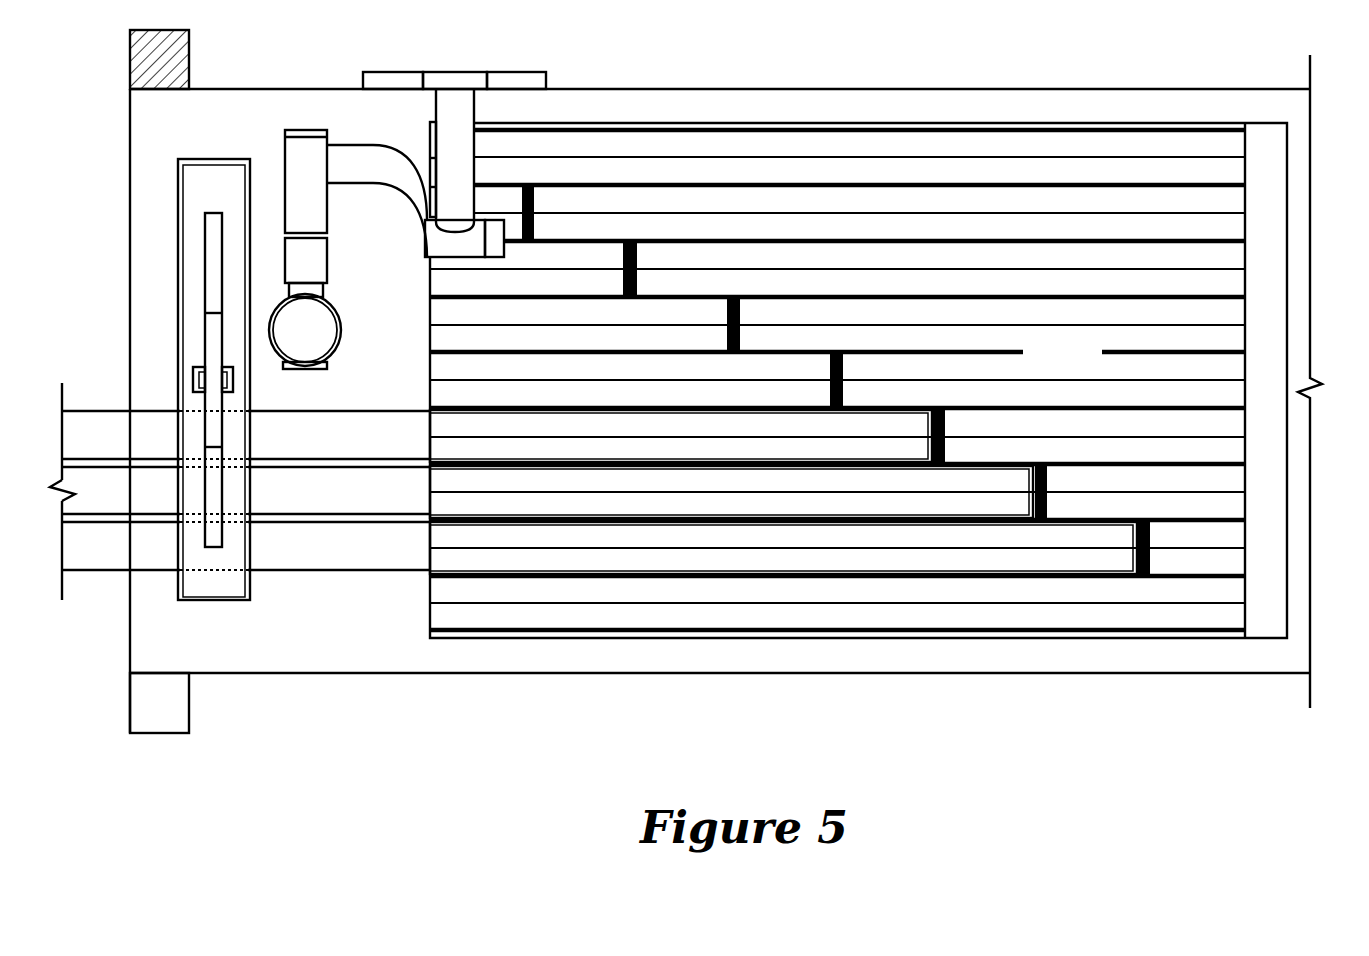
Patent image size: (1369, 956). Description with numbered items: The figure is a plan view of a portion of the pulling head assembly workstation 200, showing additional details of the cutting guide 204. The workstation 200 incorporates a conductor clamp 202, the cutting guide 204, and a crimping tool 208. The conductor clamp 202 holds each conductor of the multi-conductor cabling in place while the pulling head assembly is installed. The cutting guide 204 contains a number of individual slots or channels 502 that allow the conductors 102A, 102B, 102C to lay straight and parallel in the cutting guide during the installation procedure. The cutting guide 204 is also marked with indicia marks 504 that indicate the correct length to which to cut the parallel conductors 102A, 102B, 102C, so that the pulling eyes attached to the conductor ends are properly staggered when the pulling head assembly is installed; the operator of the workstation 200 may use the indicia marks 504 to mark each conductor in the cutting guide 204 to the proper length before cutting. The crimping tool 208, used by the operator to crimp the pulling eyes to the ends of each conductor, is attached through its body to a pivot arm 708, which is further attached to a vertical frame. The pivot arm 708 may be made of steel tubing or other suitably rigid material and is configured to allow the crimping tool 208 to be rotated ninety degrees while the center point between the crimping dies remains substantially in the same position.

The workstation 200 is at (92, 126).
The conductor clamp 202 is at (193, 270).
The cutting guide 204 is at (883, 145).
The crimping tool 208 is at (304, 330).
The pivot arm 708 is at (381, 166).
The conductor 102A is at (278, 545).
The conductor 102B is at (350, 488).
The conductor 102C is at (388, 428).
The slots or channels 502 is at (1225, 338).
The indicia marks 504 is at (1137, 522).